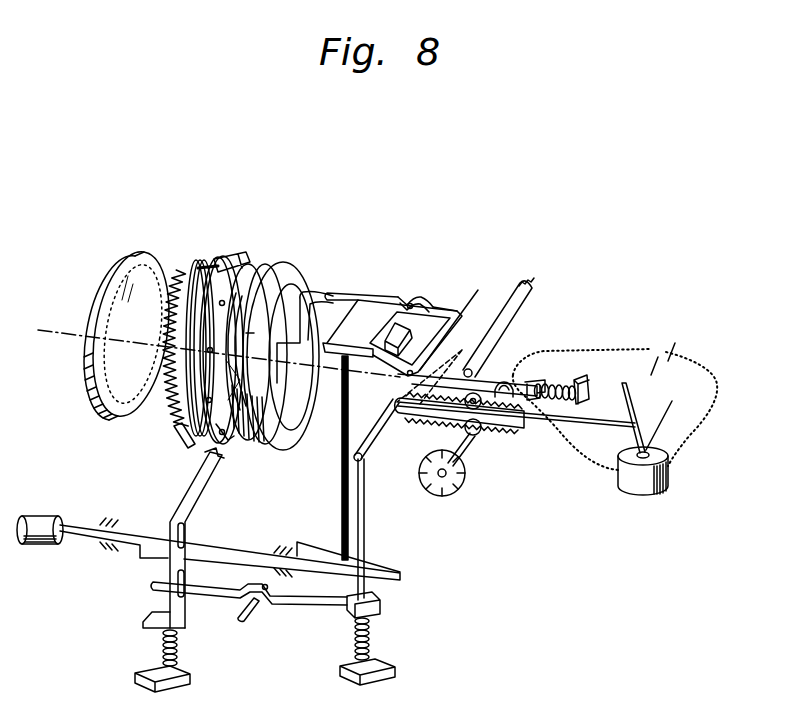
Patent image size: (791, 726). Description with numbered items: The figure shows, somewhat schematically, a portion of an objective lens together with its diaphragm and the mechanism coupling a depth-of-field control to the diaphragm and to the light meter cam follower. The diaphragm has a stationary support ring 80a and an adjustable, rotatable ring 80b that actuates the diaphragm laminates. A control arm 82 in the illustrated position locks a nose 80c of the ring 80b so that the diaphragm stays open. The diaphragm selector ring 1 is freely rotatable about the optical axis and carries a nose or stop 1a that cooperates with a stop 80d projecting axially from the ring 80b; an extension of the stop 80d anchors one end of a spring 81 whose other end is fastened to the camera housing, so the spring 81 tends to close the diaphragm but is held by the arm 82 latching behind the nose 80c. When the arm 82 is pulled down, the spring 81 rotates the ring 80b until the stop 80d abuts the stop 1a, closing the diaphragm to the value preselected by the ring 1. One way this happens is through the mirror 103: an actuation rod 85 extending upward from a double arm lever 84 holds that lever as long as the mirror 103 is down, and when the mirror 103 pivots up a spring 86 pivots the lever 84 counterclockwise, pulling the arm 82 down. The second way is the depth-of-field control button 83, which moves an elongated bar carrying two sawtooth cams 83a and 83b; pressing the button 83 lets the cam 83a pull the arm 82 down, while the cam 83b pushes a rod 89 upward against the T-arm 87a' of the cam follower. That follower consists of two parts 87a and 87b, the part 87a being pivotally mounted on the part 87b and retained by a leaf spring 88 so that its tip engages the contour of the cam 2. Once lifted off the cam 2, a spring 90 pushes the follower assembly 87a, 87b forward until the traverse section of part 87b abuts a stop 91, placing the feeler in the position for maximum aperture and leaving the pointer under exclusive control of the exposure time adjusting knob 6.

The diaphragm selector ring 1 is at (281, 267).
The nose or stop 1a is at (228, 440).
The cam 2 is at (317, 294).
The exposure time adjusting knob 6 is at (457, 488).
The stationary support ring 80a is at (196, 290).
The adjustable ring 80b is at (237, 258).
The nose 80c is at (212, 457).
The stop 80d is at (243, 257).
The spring 81 is at (171, 405).
The control arm 82 is at (223, 463).
The depth-of-field control button 83 is at (38, 522).
The sawtooth cam 83a is at (153, 558).
The sawtooth cam 83b is at (313, 543).
The double arm lever 84 is at (313, 607).
The actuation rod 85 is at (362, 518).
The spring 86 is at (372, 642).
The cam follower part 87a is at (435, 309).
The T-shaped stand 87a' is at (365, 373).
The cam follower part 87b is at (465, 335).
The leaf spring 88 is at (417, 296).
The rod 89 is at (342, 470).
The spring 90 is at (562, 384).
The stop 91 is at (408, 328).
The mirror 103 is at (397, 417).